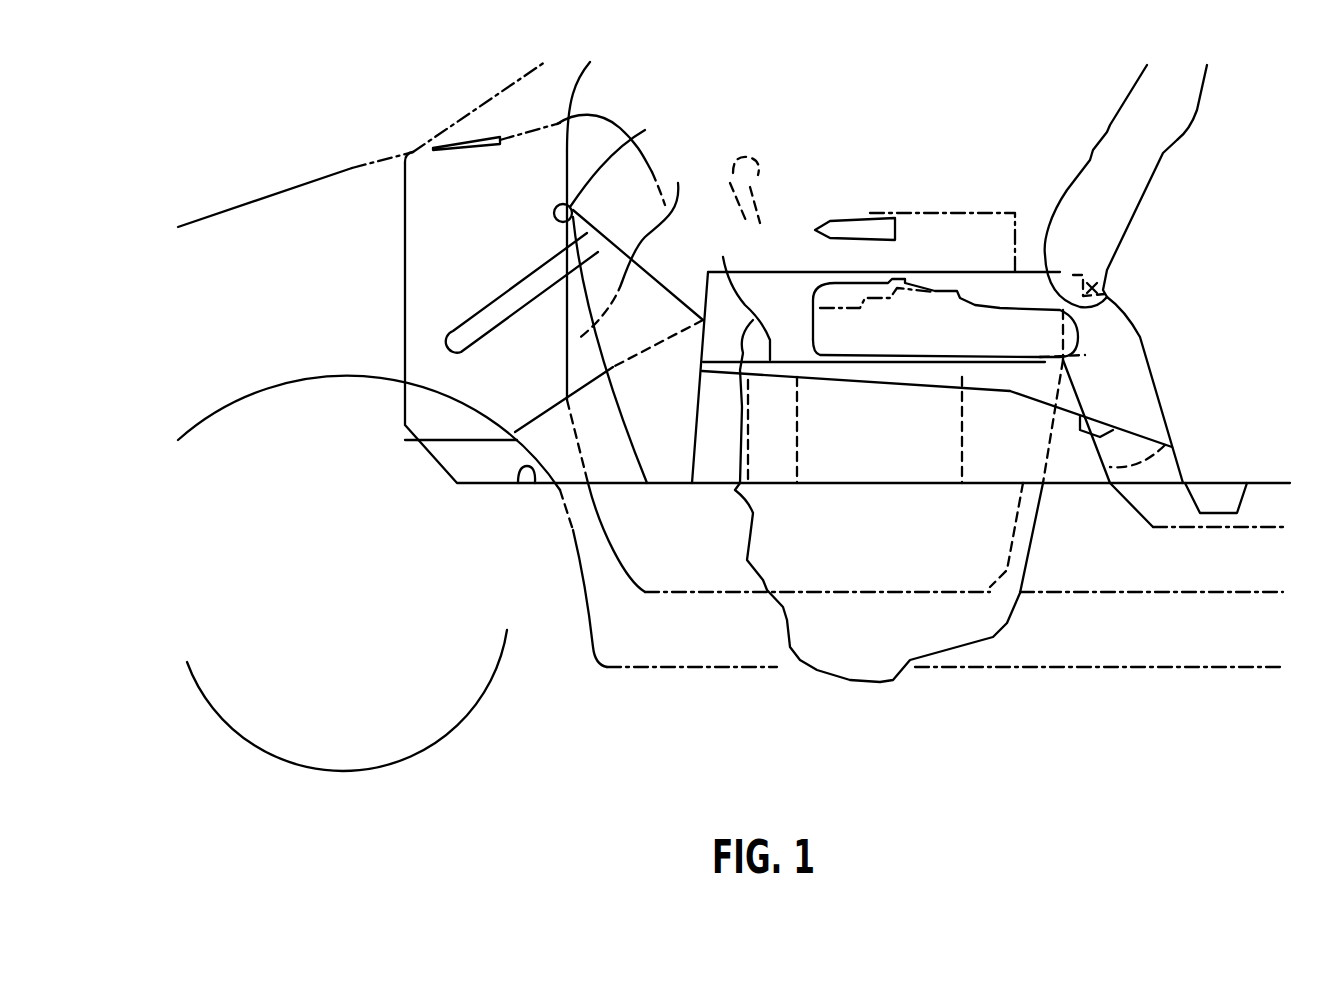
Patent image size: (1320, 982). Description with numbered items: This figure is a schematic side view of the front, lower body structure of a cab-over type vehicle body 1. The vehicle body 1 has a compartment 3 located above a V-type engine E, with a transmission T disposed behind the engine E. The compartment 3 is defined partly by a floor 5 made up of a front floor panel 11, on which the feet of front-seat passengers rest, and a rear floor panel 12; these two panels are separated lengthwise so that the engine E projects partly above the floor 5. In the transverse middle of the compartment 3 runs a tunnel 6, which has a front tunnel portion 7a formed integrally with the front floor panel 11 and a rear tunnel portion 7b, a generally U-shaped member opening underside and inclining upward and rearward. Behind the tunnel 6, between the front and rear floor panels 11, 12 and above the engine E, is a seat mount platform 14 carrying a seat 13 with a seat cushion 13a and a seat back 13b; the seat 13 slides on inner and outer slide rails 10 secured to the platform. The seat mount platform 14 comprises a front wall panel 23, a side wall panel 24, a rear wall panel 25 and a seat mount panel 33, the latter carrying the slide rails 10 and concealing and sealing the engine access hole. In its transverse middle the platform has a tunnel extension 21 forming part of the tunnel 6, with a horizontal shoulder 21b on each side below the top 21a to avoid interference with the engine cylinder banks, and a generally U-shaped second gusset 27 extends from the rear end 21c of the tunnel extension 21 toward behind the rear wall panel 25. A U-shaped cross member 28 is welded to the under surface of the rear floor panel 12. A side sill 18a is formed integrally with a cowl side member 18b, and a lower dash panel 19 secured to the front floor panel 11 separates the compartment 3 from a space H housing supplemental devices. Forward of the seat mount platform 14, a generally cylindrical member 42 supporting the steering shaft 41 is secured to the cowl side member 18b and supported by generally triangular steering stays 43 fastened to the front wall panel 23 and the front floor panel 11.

The vehicle body 1 is at (354, 146).
The compartment 3 is at (924, 107).
The floor 5 is at (613, 482).
The tunnel 6 is at (548, 412).
The front tunnel portion 7a is at (470, 440).
The rear tunnel portion 7b is at (618, 366).
The slide rails 10 is at (1033, 377).
The front floor panel 11 is at (517, 486).
The rear floor panel 12 is at (1257, 483).
The seat 13 is at (1123, 103).
The seat cushion 13a is at (862, 283).
The seat back 13b is at (1078, 170).
The seat mount platform 14 is at (860, 373).
The side sill 18a is at (748, 660).
The cowl side member 18b is at (415, 318).
The lower dash panel 19 is at (402, 232).
The tunnel extension 21 is at (928, 262).
The top 21a is at (984, 270).
The horizontal shoulder 21b is at (734, 320).
The rear end 21c is at (1125, 271).
The front wall panel 23 is at (697, 383).
The side wall panel 24 is at (893, 460).
The rear wall panel 25 is at (1133, 435).
The second gusset 27 is at (1143, 333).
The cross member 28 is at (1220, 513).
The seat mount panel 33 is at (947, 382).
The steering shaft 41 is at (500, 305).
The cylindrical member 42 is at (638, 139).
The steering stay 43 is at (624, 227).
The engine E is at (783, 318).
The space H is at (299, 290).
The transmission T is at (1165, 447).